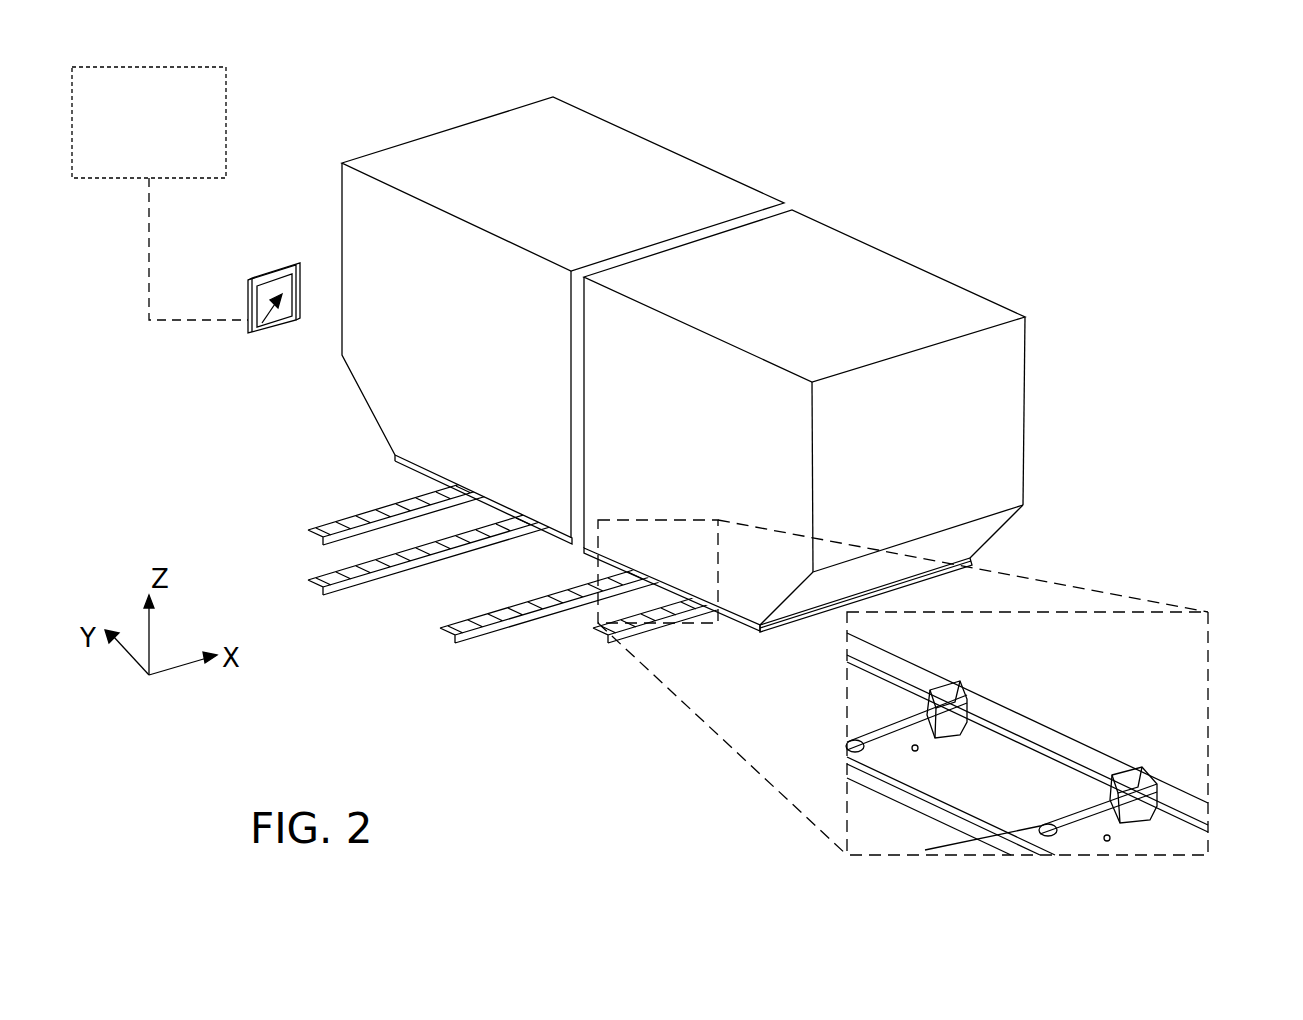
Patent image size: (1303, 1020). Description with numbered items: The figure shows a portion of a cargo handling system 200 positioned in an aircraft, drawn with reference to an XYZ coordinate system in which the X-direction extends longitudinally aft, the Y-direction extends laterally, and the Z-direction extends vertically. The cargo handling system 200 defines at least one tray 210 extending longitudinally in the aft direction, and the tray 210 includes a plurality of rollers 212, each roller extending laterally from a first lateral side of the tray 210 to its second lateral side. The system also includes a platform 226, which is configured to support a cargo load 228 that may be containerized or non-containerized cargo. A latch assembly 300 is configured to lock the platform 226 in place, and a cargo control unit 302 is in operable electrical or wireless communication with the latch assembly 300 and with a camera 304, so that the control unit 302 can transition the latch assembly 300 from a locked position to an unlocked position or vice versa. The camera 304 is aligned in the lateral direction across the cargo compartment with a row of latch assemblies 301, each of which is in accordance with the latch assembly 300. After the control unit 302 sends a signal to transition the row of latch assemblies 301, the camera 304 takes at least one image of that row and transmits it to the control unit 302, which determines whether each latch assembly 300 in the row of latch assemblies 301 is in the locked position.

The cargo handling system 200 is at (1080, 132).
The tray 210 is at (362, 515).
The rollers 212 is at (432, 503).
The platform 226 is at (543, 525).
The cargo load 228 is at (529, 409).
The latch assembly 300 is at (453, 492).
The row of latch assemblies 301 is at (735, 643).
The cargo control unit 302 is at (166, 147).
The camera 304 is at (268, 331).